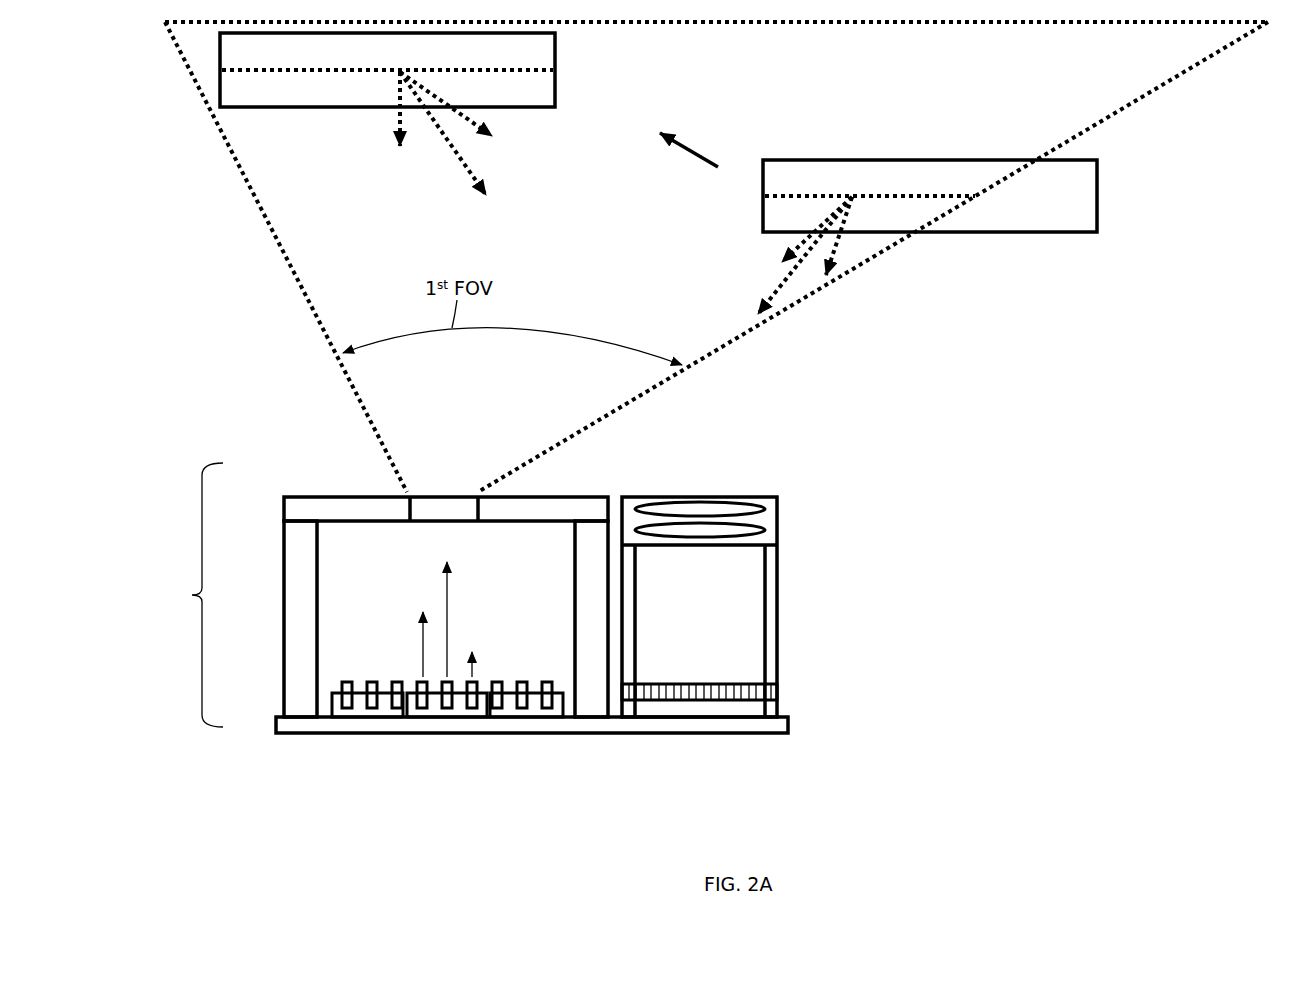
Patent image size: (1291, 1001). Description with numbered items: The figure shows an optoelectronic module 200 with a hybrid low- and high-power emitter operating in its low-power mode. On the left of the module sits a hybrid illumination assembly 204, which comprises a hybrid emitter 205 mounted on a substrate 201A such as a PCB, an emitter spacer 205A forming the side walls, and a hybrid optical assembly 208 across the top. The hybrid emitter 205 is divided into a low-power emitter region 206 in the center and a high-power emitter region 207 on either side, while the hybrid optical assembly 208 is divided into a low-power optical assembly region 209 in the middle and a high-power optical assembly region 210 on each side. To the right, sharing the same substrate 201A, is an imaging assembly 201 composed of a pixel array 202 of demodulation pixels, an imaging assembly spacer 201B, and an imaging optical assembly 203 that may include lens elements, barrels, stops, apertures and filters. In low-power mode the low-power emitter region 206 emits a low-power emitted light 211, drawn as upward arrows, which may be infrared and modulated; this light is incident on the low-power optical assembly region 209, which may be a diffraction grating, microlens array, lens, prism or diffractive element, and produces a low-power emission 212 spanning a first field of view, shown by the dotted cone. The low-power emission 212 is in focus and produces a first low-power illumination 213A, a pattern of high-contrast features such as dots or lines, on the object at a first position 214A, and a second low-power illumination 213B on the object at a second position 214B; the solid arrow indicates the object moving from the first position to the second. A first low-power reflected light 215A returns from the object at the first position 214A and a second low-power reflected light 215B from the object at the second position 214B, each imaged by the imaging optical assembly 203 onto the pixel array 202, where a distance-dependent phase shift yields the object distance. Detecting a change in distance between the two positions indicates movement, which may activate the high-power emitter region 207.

The optoelectronic module 200 is at (157, 63).
The imaging assembly 201 is at (777, 468).
The substrate 201A is at (770, 723).
The imaging assembly spacer 201B is at (628, 635).
The pixel array 202 is at (722, 703).
The imaging optical assembly 203 is at (683, 500).
The hybrid illumination assembly 204 is at (192, 595).
The hybrid emitter 205 is at (447, 700).
The emitter spacer 205A is at (297, 615).
The low-power emitter region 206 is at (456, 707).
The high-power emitter region 207 is at (383, 708).
The hybrid optical assembly 208 is at (280, 483).
The low-power optical assembly region 209 is at (433, 515).
The high-power optical assembly region 210 is at (292, 508).
The low-power emitted light 211 is at (420, 625).
The low-power emission 212 is at (707, 355).
The first low-power illumination 213A is at (878, 192).
The second low-power illumination 213B is at (330, 70).
The object at a first position 214A is at (795, 158).
The object at a second position 214B is at (557, 48).
The first low-power reflected light 215A is at (780, 290).
The second low-power reflected light 215B is at (475, 177).